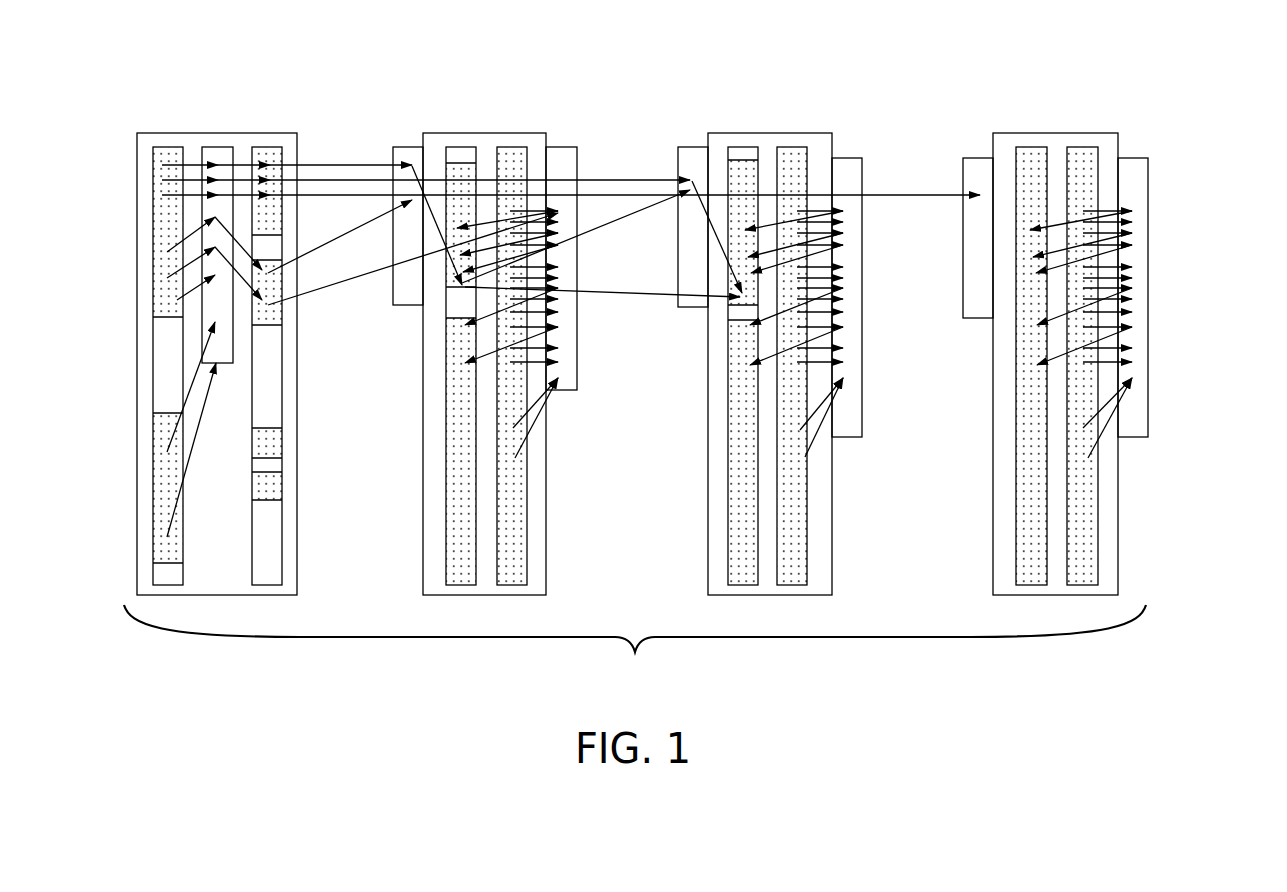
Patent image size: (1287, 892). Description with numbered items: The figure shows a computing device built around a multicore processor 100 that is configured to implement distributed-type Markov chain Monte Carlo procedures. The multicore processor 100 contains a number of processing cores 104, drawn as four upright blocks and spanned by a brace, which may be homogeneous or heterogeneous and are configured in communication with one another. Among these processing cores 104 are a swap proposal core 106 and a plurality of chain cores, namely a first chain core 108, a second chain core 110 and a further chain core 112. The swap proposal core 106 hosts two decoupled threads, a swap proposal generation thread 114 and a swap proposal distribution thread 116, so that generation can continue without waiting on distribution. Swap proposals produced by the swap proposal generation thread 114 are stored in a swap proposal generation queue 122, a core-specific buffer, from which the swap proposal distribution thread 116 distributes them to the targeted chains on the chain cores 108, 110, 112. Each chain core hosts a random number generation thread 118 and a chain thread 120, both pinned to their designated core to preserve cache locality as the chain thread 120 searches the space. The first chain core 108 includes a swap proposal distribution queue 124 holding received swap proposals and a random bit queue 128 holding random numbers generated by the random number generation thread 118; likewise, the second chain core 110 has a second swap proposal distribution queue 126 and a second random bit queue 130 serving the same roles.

The multicore processor 100 is at (1165, 233).
The processing cores 104 is at (635, 647).
The swap proposal core 106 is at (204, 133).
The first chain core 108 is at (492, 133).
The second chain core 110 is at (775, 133).
The chain core 112 is at (1068, 133).
The swap proposal generation thread 114 is at (173, 147).
The swap proposal distribution thread 116 is at (263, 147).
The random number generation thread 118 is at (512, 147).
The chain thread 120 is at (458, 148).
The swap proposal generation queue 122 is at (233, 210).
The swap proposal distribution queue 124 is at (412, 150).
The second swap proposal distribution queue 126 is at (693, 150).
The random bit queue 128 is at (558, 147).
The second random bit queue 130 is at (843, 158).